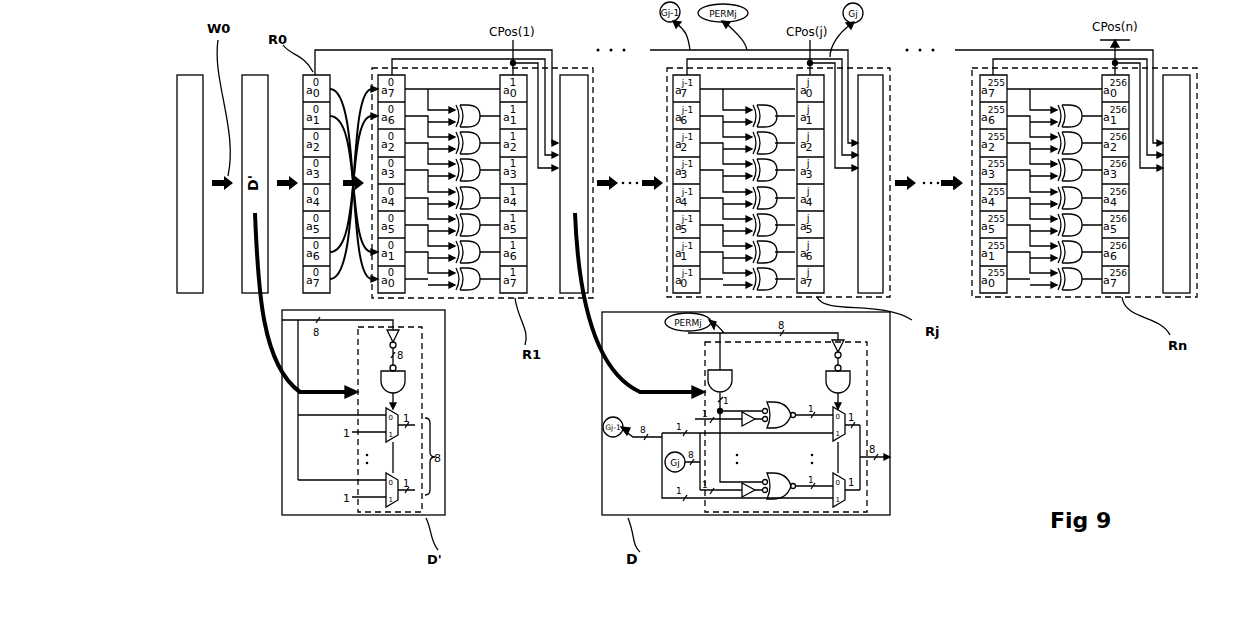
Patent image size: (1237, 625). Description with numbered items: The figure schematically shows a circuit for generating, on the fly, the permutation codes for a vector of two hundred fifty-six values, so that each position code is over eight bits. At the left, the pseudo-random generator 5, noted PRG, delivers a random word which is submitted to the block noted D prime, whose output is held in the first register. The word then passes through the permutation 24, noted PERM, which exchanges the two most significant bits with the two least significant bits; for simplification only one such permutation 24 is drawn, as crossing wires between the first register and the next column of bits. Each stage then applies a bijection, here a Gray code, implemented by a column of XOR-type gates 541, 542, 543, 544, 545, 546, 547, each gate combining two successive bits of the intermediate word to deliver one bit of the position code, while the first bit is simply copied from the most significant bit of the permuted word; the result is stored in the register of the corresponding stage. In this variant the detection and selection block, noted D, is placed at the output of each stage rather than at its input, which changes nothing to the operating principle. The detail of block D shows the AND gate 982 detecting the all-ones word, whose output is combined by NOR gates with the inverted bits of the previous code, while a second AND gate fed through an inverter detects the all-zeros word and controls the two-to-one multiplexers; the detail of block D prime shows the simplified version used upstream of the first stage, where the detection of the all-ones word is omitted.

The pseudo-random generator 5 is at (193, 73).
The permutation block 24 is at (353, 73).
The XOR gate 541 is at (765, 107).
The XOR gate 542 is at (765, 135).
The XOR gate 543 is at (765, 162).
The XOR gate 544 is at (765, 190).
The XOR gate 545 is at (778, 221).
The XOR gate 546 is at (778, 249).
The XOR gate 547 is at (778, 276).
The AND gate 982 is at (731, 378).